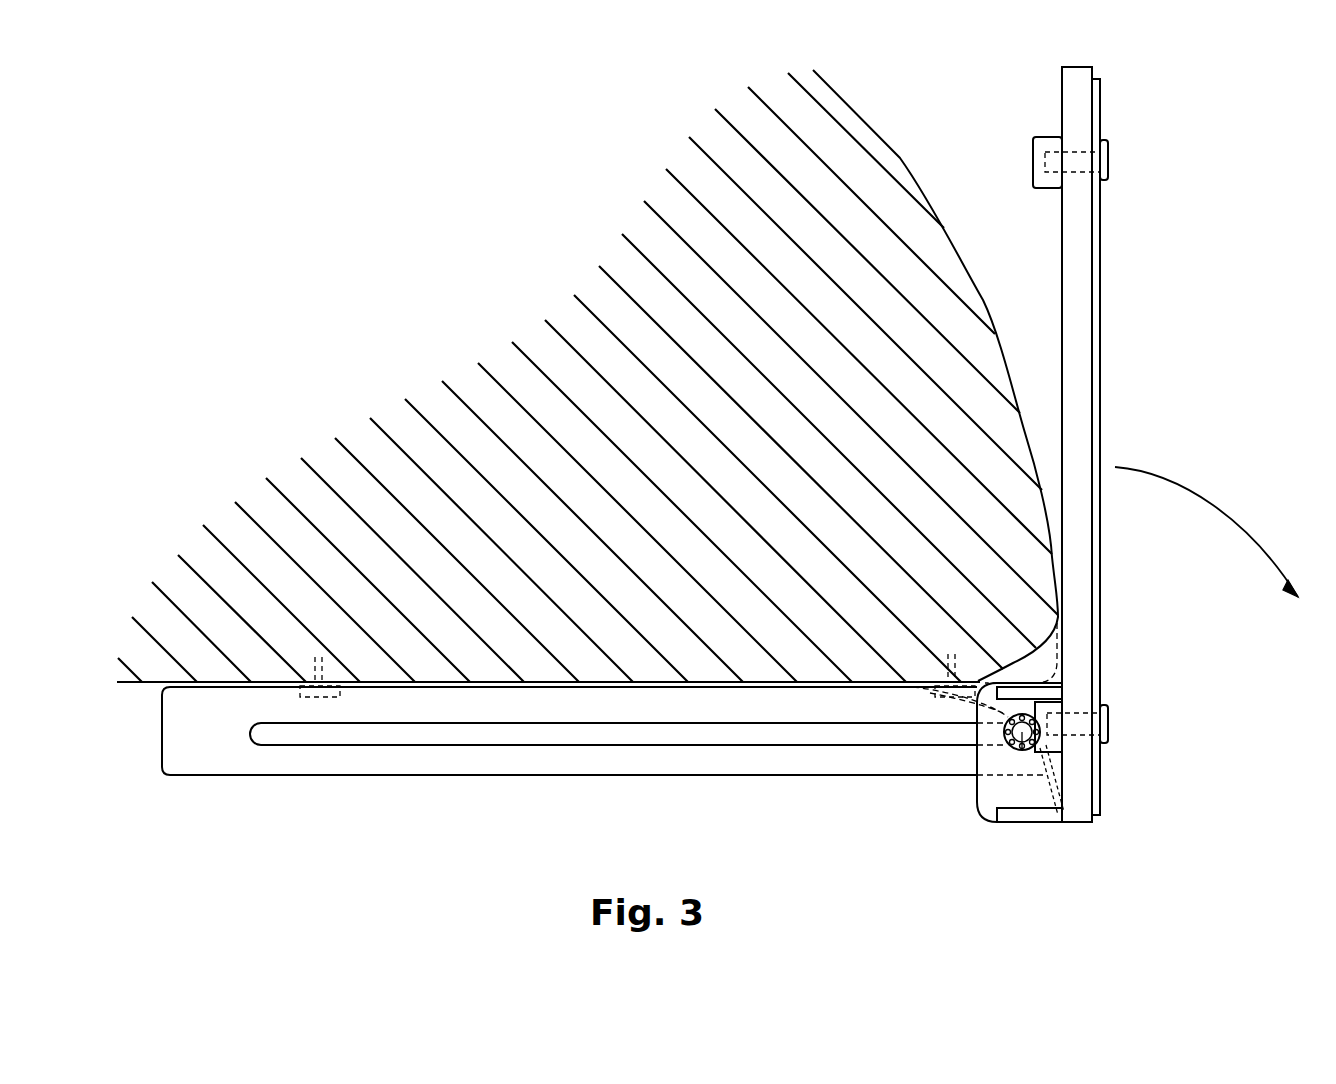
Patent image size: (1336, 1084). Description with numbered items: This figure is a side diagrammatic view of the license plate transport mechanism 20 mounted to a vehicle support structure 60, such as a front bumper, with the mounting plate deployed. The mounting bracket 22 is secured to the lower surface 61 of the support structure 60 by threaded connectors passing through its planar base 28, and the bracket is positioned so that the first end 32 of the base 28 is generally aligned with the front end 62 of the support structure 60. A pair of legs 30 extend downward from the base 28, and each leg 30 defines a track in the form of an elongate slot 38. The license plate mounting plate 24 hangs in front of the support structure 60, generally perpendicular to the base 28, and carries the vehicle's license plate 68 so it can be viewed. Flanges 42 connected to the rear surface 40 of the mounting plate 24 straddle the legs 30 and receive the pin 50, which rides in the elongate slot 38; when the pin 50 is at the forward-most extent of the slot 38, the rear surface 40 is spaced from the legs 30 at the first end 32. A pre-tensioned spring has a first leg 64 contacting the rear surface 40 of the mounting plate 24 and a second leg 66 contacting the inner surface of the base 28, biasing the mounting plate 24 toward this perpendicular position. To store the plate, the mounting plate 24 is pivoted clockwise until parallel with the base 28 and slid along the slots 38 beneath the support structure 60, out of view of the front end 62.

The license plate transport mechanism 20 is at (1160, 418).
The mounting bracket 22 is at (183, 743).
The license plate mounting plate 24 is at (1073, 255).
The base 28 is at (222, 682).
The legs 30 is at (203, 757).
The first end 32 is at (1077, 705).
The elongate slot 38 is at (373, 737).
The rear surface 40 is at (1062, 92).
The flanges 42 is at (1036, 803).
The pin 50 is at (1023, 747).
The vehicle support structure 60 is at (637, 264).
The lower surface 61 is at (135, 684).
The front end 62 is at (1038, 457).
The first leg 64 is at (1040, 792).
The second leg 66 is at (952, 697).
The license plate 68 is at (1100, 195).